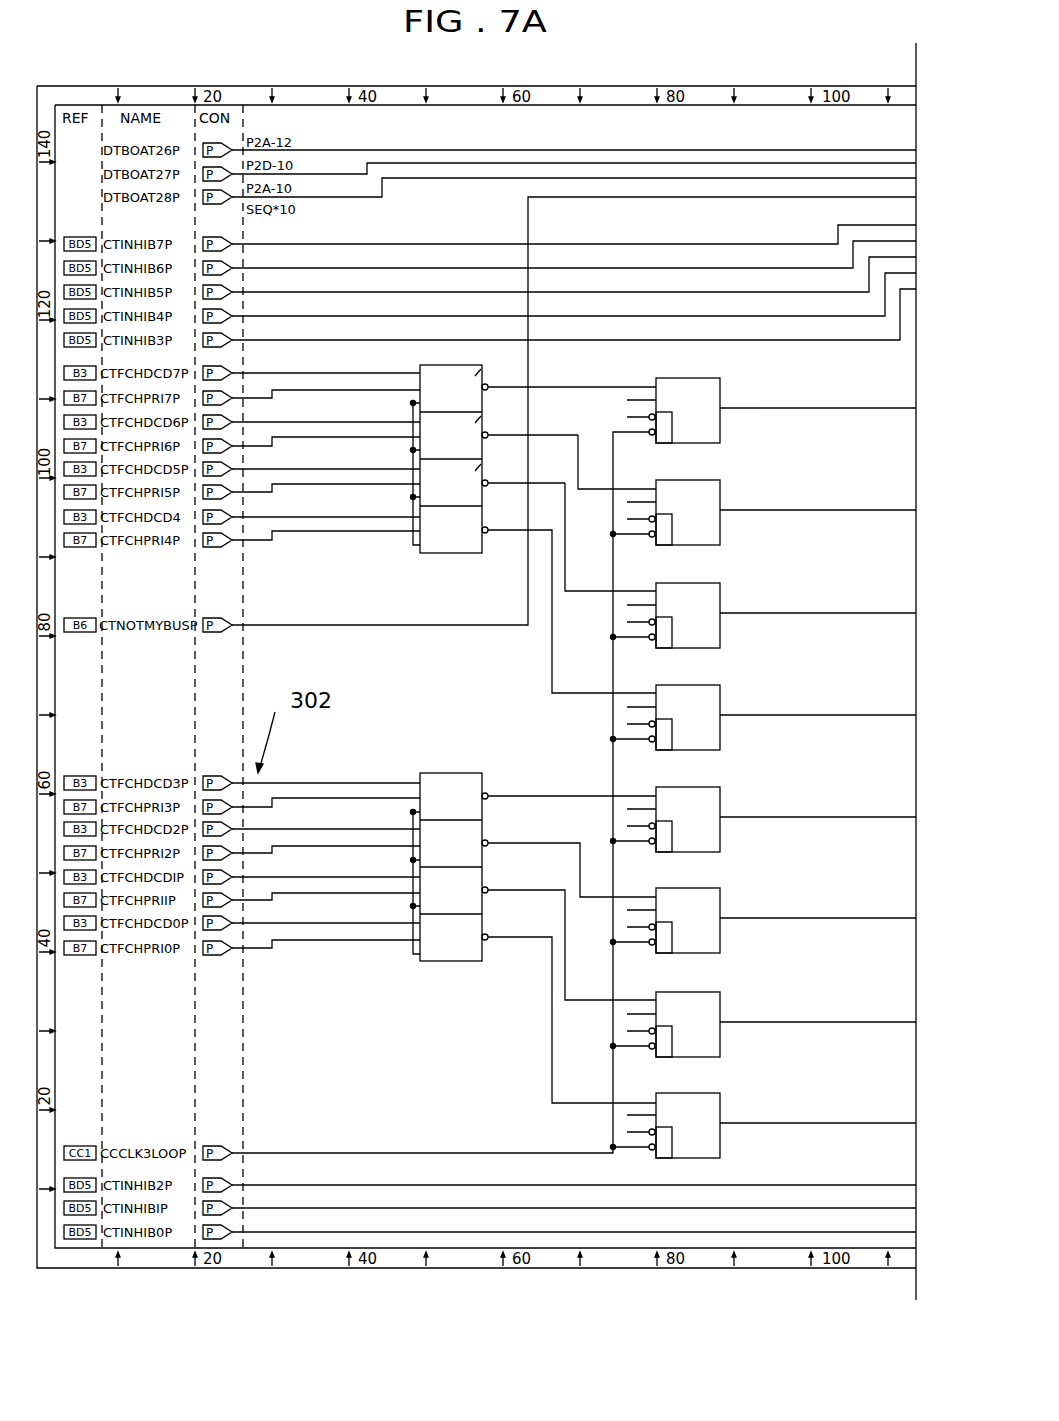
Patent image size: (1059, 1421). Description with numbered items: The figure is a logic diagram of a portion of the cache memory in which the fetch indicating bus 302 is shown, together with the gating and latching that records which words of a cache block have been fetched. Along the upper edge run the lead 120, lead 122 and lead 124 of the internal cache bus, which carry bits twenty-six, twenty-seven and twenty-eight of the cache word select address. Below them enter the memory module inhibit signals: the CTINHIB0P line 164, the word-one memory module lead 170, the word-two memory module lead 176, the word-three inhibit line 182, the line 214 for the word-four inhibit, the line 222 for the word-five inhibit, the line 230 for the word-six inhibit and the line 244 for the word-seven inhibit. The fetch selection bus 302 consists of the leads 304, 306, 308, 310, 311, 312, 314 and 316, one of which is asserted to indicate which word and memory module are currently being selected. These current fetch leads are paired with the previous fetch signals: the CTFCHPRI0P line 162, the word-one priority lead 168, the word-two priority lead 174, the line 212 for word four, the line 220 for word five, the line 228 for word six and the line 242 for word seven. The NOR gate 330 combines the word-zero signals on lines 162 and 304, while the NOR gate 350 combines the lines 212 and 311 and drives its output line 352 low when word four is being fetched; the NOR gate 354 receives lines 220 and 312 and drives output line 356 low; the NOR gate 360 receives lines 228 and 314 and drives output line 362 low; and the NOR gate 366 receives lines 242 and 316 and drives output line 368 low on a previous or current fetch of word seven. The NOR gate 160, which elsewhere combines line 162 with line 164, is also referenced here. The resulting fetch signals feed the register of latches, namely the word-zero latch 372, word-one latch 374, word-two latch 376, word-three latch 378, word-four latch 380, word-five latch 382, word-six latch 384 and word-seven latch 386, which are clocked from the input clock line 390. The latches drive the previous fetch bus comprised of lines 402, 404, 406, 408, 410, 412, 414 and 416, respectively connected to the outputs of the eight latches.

The lead 120 is at (574, 130).
The lead 122 is at (574, 142).
The lead 124 is at (574, 153).
The NOR gate 160 is at (326, 761).
The CTFCHPRI0P line 162 is at (326, 978).
The CTINHIB0P line 164 is at (574, 1192).
The 01 priority lead 168 is at (326, 942).
The 01 memory module lead 170 is at (574, 1155).
The 02 priority lead 174 is at (326, 884).
The 02 memory module lead 176 is at (574, 1142).
The 03 inhibit line 182 is at (574, 276).
The line 212 is at (326, 558).
The line 214 is at (574, 250).
The line 220 is at (326, 465).
The line 222 is at (574, 253).
The line 228 is at (326, 419).
The line 230 is at (574, 240).
The line 242 is at (326, 371).
The line 244 is at (574, 224).
The fetch selection bus 302 is at (305, 582).
The lead 304 is at (326, 975).
The lead 306 is at (326, 865).
The lead 308 is at (326, 816).
The lead 310 is at (326, 754).
The lead 311 is at (326, 502).
The lead 312 is at (326, 452).
The lead 314 is at (326, 405).
The lead 316 is at (326, 358).
The NOR gate 330 is at (447, 904).
The NOR gate 350 is at (442, 483).
The output line 352 is at (562, 611).
The NOR gate 354 is at (531, 465).
The output line 356 is at (610, 537).
The NOR gate 360 is at (533, 414).
The output line 362 is at (617, 439).
The NOR gate 366 is at (538, 368).
The output line 368 is at (608, 365).
The word 0 latch 372 is at (713, 1127).
The word 01 latch 374 is at (716, 1024).
The word 02 latch 376 is at (713, 922).
The word 03 latch 378 is at (709, 819).
The word 04 latch 380 is at (709, 718).
The word 05 latch 382 is at (712, 610).
The word 06 latch 384 is at (714, 506).
The word 07 latch 386 is at (715, 408).
The input clock line 390 is at (440, 792).
The line 402 is at (838, 1081).
The line 404 is at (838, 978).
The line 406 is at (838, 876).
The line 408 is at (838, 773).
The line 410 is at (838, 671).
The line 412 is at (838, 567).
The line 414 is at (838, 465).
The line 416 is at (838, 377).